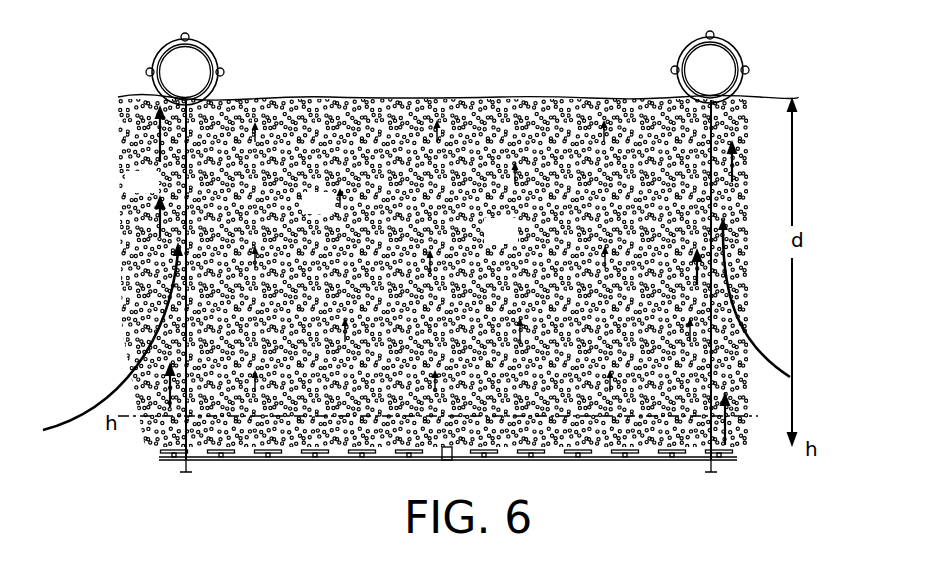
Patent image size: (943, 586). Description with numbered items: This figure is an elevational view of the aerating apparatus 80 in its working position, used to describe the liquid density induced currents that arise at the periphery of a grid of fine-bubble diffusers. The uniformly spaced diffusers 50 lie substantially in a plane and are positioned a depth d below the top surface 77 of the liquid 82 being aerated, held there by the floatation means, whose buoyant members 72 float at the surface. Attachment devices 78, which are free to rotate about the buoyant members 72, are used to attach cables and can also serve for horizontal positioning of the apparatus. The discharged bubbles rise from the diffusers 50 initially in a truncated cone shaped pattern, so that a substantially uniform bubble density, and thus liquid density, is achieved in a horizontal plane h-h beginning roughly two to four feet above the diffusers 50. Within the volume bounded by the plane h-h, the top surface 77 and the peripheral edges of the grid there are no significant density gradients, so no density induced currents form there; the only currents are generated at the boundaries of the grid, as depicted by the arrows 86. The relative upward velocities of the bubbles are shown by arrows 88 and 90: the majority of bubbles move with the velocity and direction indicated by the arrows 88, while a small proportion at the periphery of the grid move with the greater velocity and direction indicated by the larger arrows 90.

The diffusers 50 is at (328, 460).
The buoyant members 72 is at (176, 66).
The top surface of the liquid 77 is at (459, 96).
The attachment devices 78 is at (213, 48).
The aerating apparatus 80 is at (560, 64).
The liquid 82 is at (515, 241).
The arrows indicating liquid density induced currents 86 is at (72, 409).
The arrows indicating bubble velocity 88 is at (338, 203).
The larger arrows indicating bubble velocity 90 is at (160, 218).